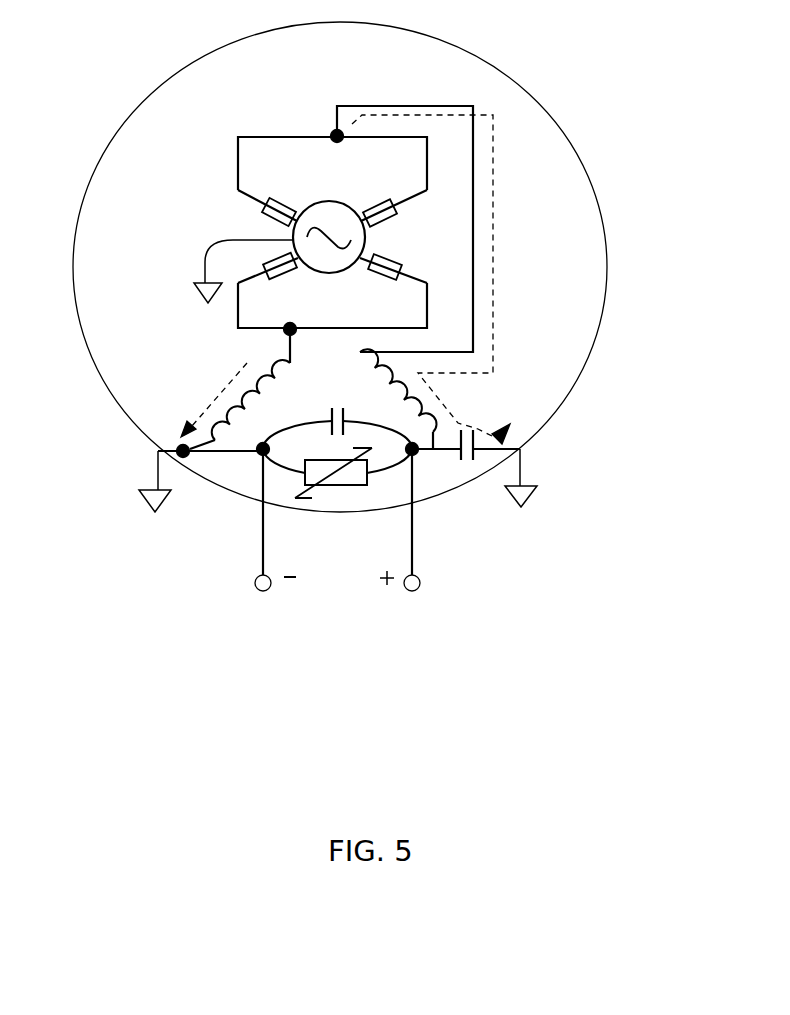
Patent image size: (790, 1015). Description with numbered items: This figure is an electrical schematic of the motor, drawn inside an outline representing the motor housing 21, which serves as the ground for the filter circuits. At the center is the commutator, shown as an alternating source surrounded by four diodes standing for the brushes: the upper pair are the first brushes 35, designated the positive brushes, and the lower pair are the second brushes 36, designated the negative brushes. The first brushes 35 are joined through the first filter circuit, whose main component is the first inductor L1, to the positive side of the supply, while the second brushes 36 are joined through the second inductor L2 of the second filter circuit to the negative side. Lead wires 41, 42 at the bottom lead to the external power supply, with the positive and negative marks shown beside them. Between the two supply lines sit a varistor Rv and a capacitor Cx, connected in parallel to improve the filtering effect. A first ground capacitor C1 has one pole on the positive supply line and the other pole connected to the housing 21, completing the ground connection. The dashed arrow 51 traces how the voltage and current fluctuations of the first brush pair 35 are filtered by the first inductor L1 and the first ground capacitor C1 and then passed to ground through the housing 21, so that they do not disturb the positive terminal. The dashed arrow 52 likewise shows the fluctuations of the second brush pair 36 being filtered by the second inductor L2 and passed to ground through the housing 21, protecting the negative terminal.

The housing 21 is at (577, 378).
The first brushes 35 is at (283, 210).
The second brushes 36 is at (373, 279).
The lead wire 41 is at (402, 603).
The lead wire 42 is at (275, 605).
The dashed arrow 51 is at (497, 235).
The dashed arrow 52 is at (247, 363).
The first inductor L1 is at (419, 390).
The second inductor L2 is at (226, 400).
The capacitor Cx is at (328, 406).
The varistor Rv is at (333, 494).
The first ground capacitor C1 is at (464, 465).